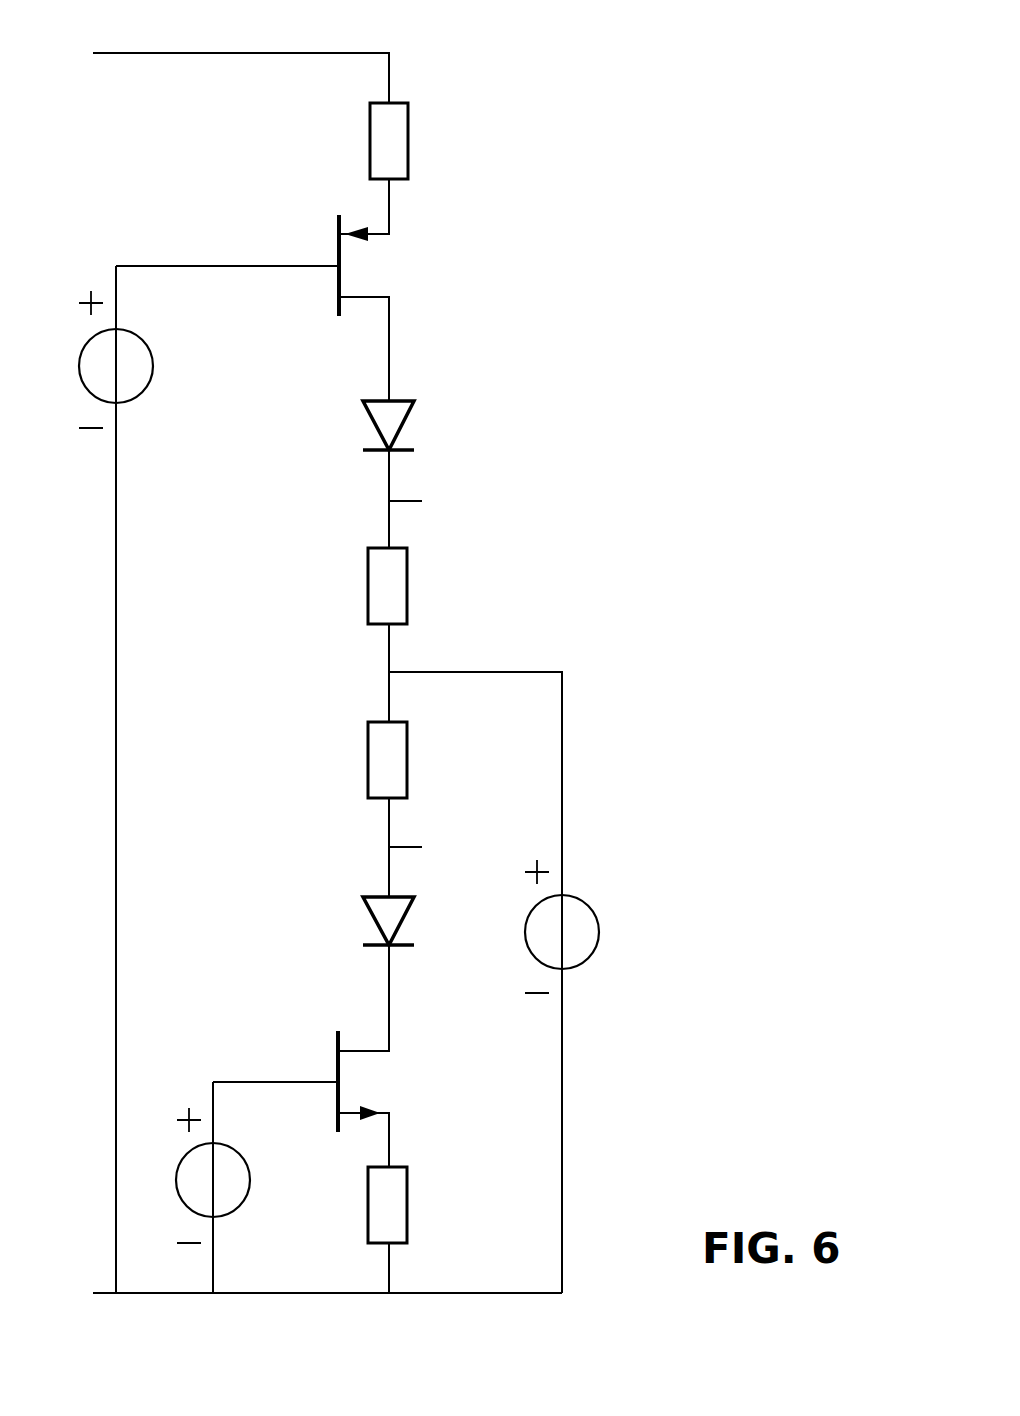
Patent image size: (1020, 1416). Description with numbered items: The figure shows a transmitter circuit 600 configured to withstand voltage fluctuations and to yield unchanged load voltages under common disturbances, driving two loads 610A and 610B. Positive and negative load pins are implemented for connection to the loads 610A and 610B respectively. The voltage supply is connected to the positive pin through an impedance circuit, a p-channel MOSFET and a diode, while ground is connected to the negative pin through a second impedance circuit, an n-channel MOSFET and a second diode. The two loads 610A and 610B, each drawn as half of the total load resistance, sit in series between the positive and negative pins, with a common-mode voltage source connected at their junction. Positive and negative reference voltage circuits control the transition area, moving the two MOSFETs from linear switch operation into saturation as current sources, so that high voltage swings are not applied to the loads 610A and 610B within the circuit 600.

The transmitter circuit 600 is at (643, 79).
The load 610A is at (400, 548).
The load 610B is at (400, 722).